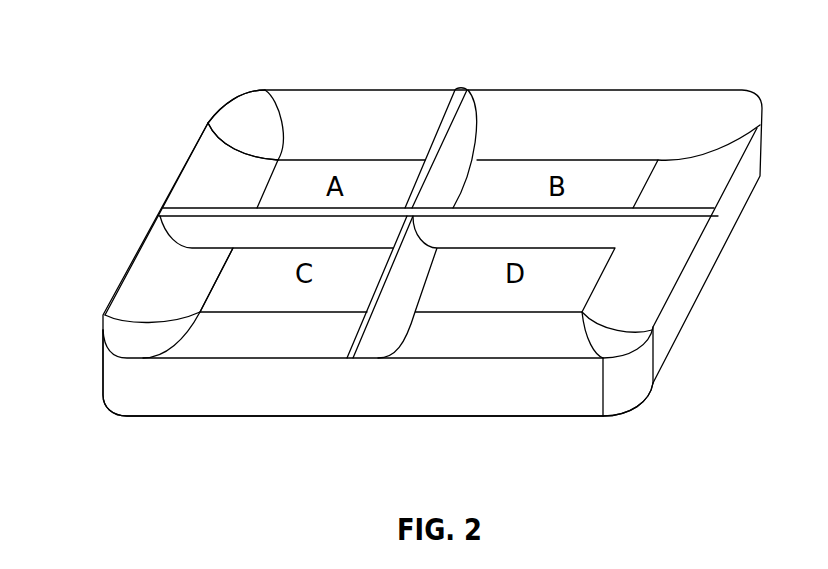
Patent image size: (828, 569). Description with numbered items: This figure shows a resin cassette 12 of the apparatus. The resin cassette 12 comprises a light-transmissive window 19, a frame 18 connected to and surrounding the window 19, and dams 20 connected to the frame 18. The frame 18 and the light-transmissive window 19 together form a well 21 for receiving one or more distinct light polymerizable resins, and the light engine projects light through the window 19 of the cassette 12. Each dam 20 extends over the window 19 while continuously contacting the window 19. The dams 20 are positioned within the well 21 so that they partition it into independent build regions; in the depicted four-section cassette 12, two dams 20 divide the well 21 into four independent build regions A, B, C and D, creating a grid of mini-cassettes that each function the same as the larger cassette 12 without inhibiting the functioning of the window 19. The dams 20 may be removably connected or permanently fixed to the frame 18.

The resin cassette 12 is at (112, 44).
The frame 18 is at (133, 401).
The light-transmissive window 19 is at (224, 289).
The dam 20 is at (468, 125).
The well 21 is at (227, 116).